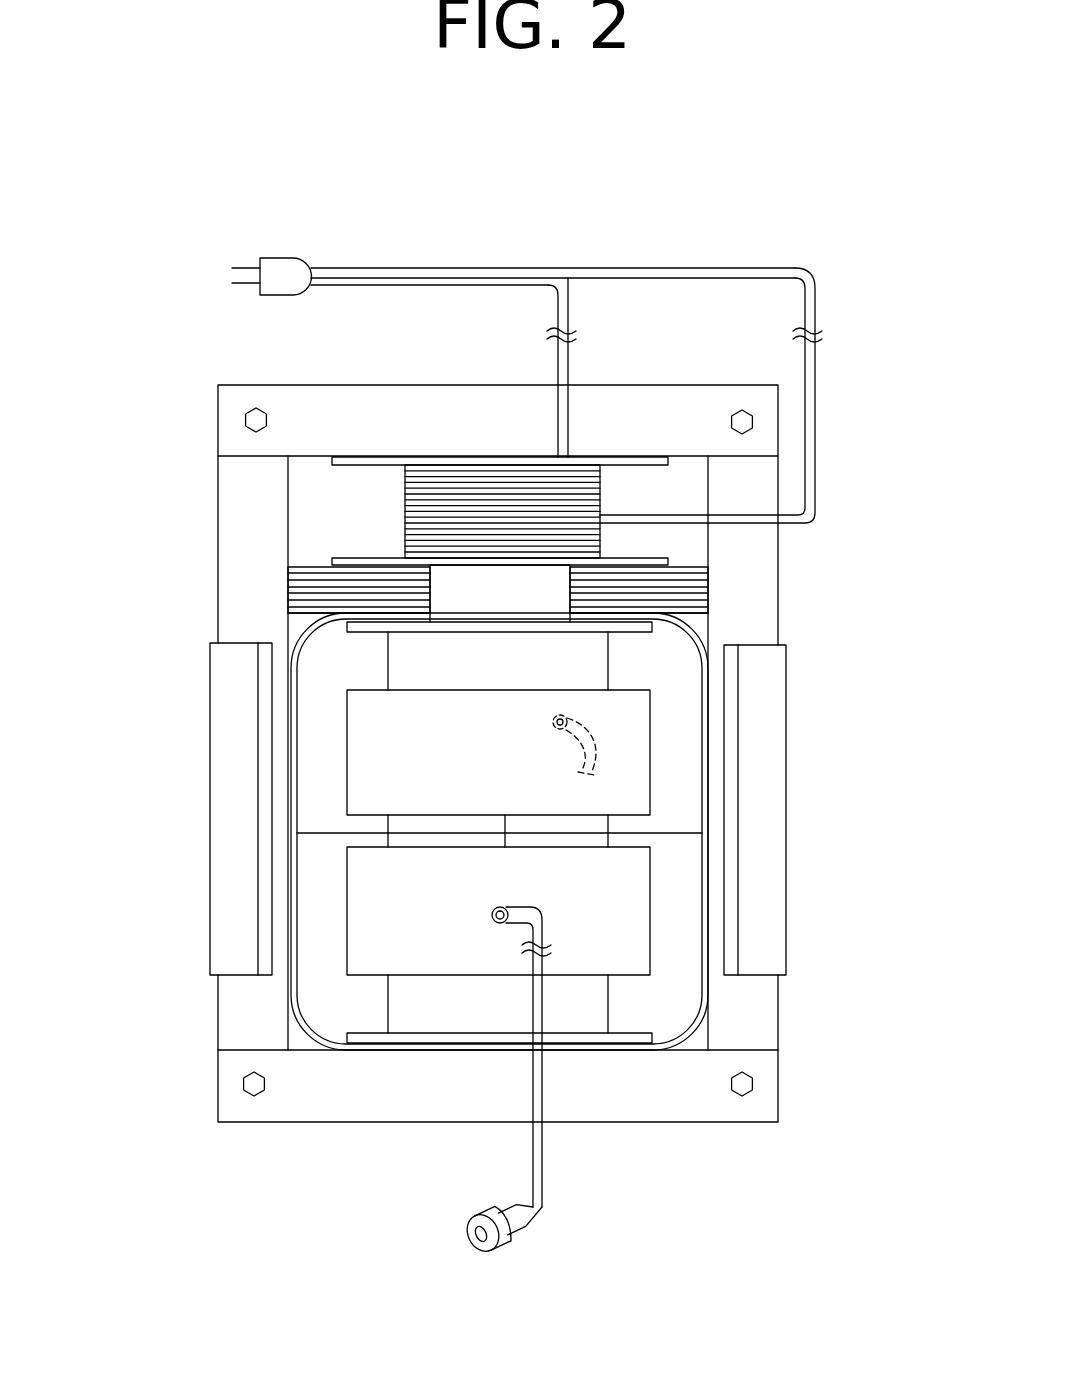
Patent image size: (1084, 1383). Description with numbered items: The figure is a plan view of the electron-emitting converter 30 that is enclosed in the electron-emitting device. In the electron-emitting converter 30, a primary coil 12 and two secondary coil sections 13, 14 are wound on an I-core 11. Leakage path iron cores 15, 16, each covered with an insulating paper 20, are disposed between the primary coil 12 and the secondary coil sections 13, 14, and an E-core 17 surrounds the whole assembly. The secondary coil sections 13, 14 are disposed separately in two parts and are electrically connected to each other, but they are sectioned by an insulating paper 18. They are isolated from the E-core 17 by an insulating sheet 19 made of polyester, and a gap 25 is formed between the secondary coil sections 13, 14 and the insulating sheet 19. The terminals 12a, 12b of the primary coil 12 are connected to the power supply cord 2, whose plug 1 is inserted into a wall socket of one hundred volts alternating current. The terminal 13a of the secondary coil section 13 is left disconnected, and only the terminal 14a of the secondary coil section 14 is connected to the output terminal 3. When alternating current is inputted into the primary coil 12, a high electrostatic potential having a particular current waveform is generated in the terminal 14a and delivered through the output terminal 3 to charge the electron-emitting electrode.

The plug 1 is at (293, 258).
The power supply cord 2 is at (500, 270).
The output terminal 3 is at (533, 1232).
The I-core 11 is at (491, 606).
The primary coil 12 is at (413, 505).
The terminal 12a is at (568, 368).
The terminal 12b is at (810, 368).
The secondary coil section 13 is at (427, 798).
The terminal 13a is at (560, 734).
The secondary coil section 14 is at (430, 938).
The terminal 14a is at (525, 912).
The leakage path iron core 15 is at (290, 588).
The leakage path iron core 16 is at (698, 596).
The E-core 17 is at (757, 1032).
The insulating paper 18 is at (330, 833).
The insulating sheet 19 is at (693, 632).
The insulating paper 20 is at (315, 565).
The gap 25 is at (670, 763).
The electron-emitting converter 30 is at (429, 358).